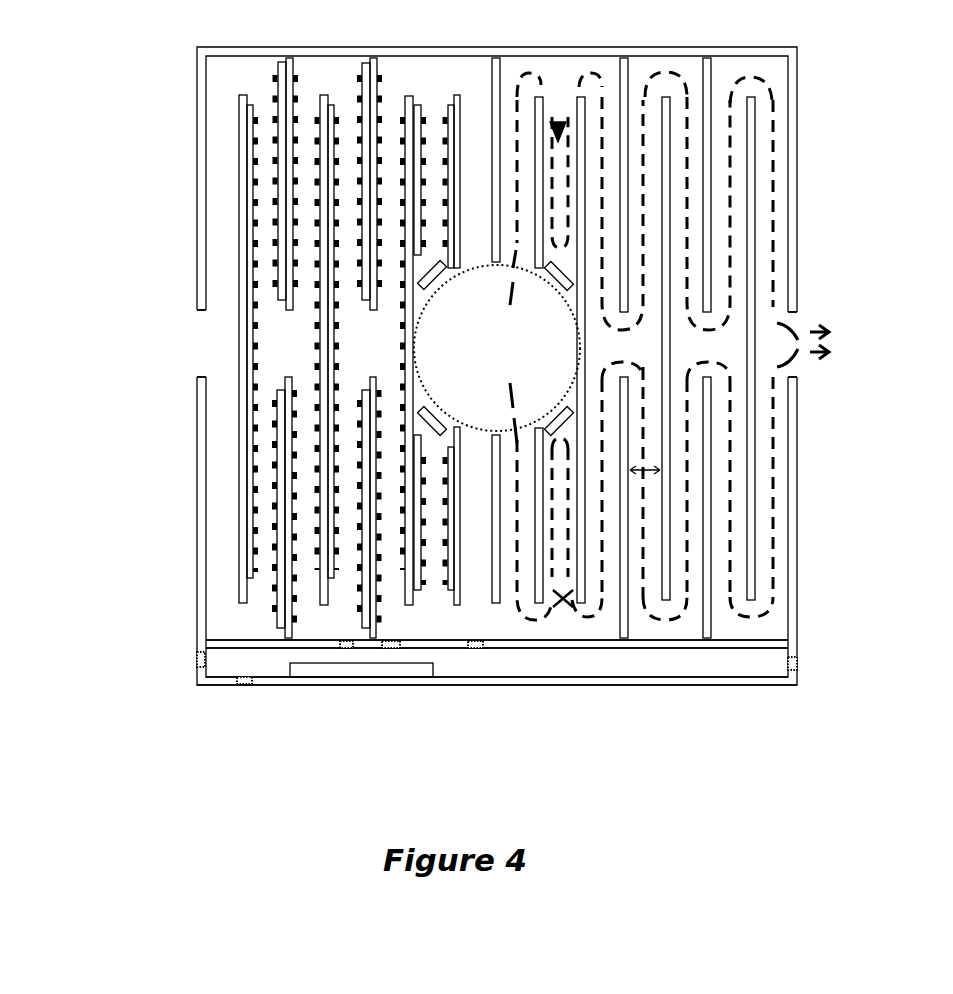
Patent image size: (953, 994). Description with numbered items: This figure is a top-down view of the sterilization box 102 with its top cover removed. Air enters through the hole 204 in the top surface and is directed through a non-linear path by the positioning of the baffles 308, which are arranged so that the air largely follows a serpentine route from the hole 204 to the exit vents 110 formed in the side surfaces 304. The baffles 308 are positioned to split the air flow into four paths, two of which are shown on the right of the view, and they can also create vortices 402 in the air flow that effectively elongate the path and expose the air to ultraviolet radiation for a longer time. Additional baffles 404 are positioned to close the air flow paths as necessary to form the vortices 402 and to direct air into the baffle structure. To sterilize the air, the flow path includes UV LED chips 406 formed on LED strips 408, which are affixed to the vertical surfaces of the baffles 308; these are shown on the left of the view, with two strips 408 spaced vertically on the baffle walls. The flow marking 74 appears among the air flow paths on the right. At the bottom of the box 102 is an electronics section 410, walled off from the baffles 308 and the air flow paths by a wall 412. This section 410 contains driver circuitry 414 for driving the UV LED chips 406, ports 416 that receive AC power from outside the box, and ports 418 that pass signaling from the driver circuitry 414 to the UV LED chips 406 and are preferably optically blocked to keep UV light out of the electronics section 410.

The sterilization box 102 is at (822, 132).
The side surfaces 304 is at (197, 237).
The exit vents 110 is at (800, 320).
The LED strips 408 is at (358, 66).
The UV LED chips 406 is at (382, 125).
The hole 204 is at (518, 360).
The baffles 404 is at (433, 413).
The baffles 308 is at (745, 120).
The vortices 402 is at (570, 88).
The airflow 74 is at (562, 560).
The electronics section 410 is at (135, 668).
The wall 412 is at (765, 640).
The driver circuitry 414 is at (325, 675).
The ports 416 is at (195, 663).
The ports 418 is at (477, 640).